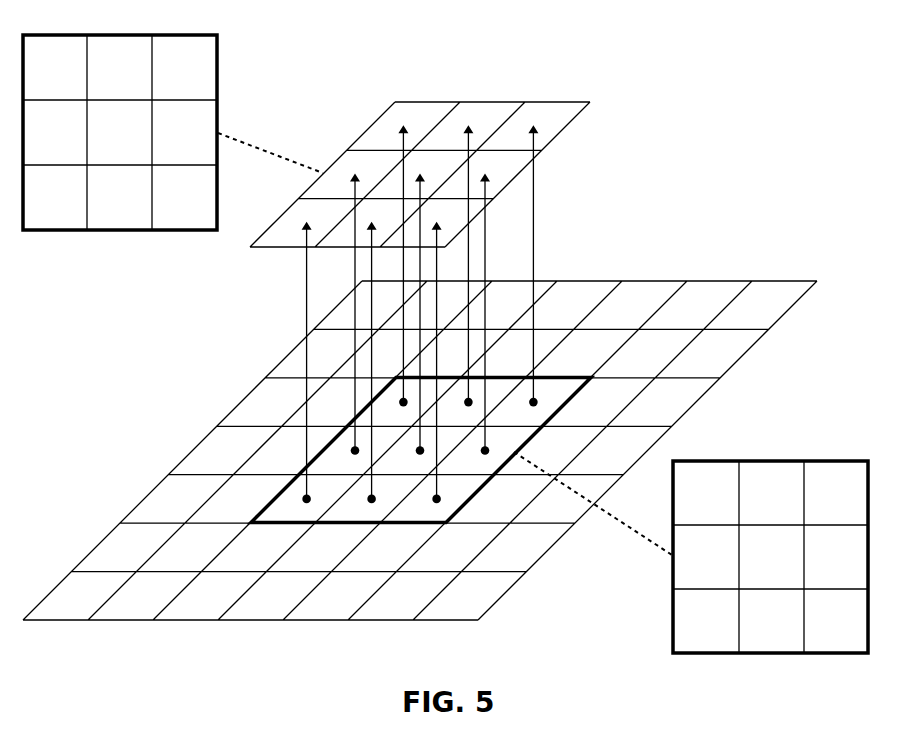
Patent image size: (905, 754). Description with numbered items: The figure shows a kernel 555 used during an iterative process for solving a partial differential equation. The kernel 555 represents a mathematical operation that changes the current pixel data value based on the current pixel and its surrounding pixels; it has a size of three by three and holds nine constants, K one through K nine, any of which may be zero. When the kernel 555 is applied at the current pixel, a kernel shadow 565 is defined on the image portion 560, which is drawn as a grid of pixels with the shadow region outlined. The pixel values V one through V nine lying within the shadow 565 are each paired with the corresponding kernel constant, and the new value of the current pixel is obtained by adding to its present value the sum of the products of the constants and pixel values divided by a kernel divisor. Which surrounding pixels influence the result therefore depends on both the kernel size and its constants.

The kernel 555 is at (135, 34).
The image portion 560 is at (740, 281).
The kernel shadow 565 is at (788, 460).